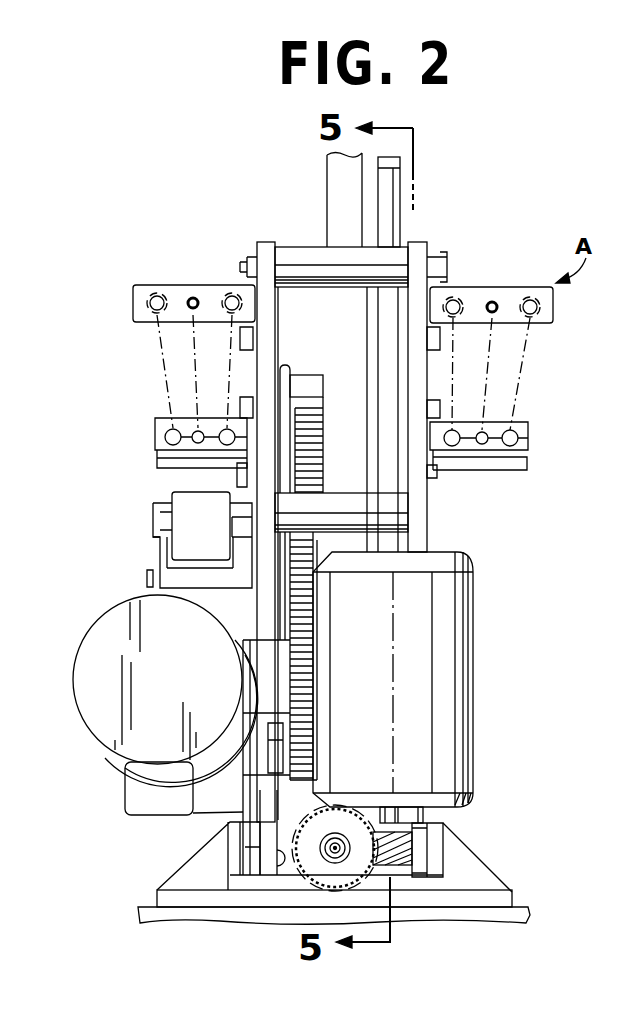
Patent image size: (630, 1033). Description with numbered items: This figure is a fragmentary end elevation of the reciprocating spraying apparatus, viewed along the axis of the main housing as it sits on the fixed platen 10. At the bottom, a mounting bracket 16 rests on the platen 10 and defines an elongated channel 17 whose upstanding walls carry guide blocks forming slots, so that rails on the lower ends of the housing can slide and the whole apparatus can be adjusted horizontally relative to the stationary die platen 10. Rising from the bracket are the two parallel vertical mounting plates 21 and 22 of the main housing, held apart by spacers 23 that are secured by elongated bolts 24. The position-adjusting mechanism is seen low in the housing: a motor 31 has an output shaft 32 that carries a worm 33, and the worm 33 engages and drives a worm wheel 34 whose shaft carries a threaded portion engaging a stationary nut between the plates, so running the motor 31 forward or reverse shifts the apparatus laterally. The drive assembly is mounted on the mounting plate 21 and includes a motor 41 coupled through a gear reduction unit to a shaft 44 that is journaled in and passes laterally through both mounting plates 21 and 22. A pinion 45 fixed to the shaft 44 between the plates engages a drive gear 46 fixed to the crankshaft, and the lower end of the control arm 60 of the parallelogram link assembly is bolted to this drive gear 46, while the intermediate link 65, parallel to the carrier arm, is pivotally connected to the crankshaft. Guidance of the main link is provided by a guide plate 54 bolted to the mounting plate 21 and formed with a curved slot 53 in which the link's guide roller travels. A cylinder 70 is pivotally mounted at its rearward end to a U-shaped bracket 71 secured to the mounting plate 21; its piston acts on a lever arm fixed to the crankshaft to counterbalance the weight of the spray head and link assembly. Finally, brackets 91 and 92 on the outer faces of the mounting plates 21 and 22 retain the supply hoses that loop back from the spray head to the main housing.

The fixed platen 10 is at (520, 905).
The mounting bracket 16 is at (462, 838).
The elongated channel 17 is at (282, 832).
The mounting plate 21 is at (262, 243).
The mounting plate 22 is at (428, 245).
The spacers 23 is at (308, 260).
The elongated bolts 24 is at (447, 265).
The motor 31 is at (393, 679).
The output shaft 32 is at (392, 822).
The worm 33 is at (398, 866).
The worm wheel 34 is at (336, 827).
The motor 41 is at (165, 705).
The shaft 44 is at (281, 733).
The pinion 45 is at (270, 776).
The drive gear 46 is at (290, 637).
The curved slot 53 is at (385, 174).
The guide plate 54 is at (400, 218).
The control arm 60 is at (323, 337).
The intermediate link 65 is at (283, 368).
The cylinder 70 is at (180, 500).
The U-shaped bracket 71 is at (162, 550).
The bracket 91 is at (553, 313).
The bracket 92 is at (155, 434).